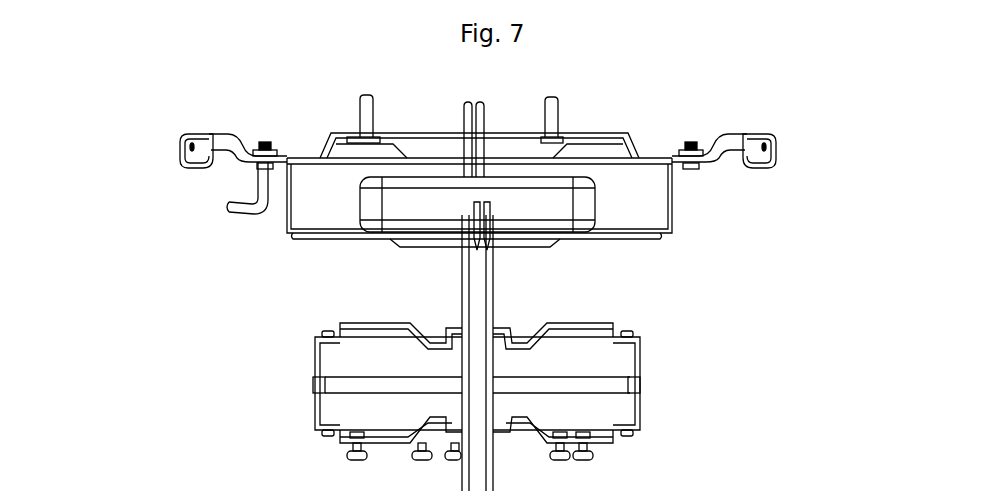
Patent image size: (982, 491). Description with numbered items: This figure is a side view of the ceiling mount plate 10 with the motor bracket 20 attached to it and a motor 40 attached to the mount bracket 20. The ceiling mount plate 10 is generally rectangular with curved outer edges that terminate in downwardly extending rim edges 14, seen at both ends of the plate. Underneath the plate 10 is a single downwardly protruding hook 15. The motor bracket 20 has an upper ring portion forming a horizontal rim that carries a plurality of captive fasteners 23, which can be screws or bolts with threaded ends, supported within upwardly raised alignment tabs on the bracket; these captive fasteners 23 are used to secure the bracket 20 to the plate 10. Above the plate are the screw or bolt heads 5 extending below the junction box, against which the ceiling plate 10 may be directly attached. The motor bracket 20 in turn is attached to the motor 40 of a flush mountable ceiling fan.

The screw or bolt heads 5 is at (545, 107).
The ceiling mount plate 10 is at (591, 102).
The rim edges 14 is at (183, 155).
The hook 15 is at (240, 214).
The motor bracket 20 is at (606, 258).
The captive fasteners 23 is at (688, 143).
The motor 40 is at (610, 405).